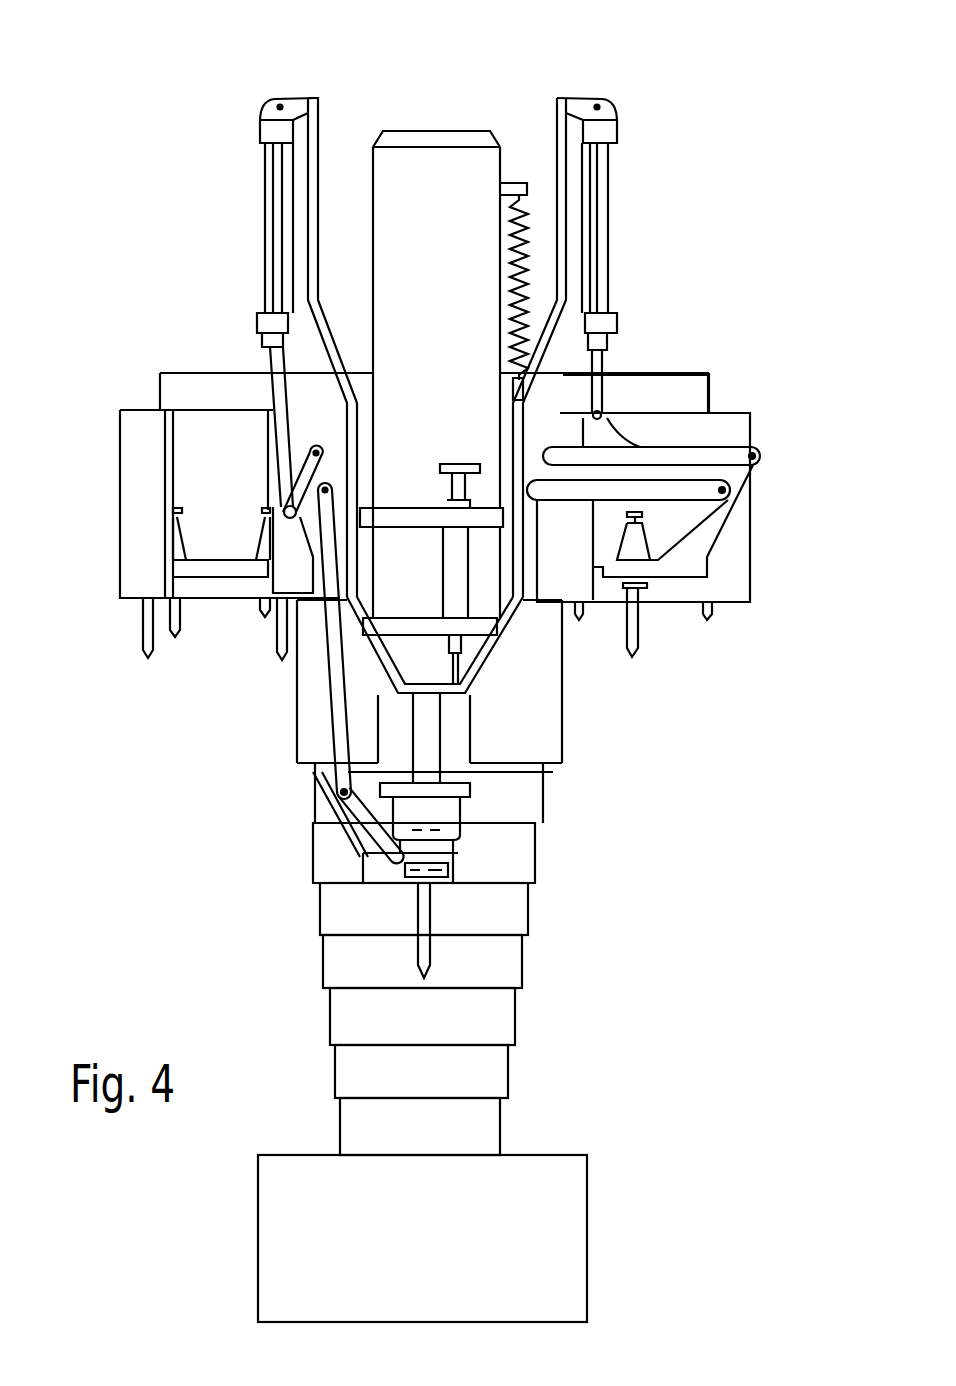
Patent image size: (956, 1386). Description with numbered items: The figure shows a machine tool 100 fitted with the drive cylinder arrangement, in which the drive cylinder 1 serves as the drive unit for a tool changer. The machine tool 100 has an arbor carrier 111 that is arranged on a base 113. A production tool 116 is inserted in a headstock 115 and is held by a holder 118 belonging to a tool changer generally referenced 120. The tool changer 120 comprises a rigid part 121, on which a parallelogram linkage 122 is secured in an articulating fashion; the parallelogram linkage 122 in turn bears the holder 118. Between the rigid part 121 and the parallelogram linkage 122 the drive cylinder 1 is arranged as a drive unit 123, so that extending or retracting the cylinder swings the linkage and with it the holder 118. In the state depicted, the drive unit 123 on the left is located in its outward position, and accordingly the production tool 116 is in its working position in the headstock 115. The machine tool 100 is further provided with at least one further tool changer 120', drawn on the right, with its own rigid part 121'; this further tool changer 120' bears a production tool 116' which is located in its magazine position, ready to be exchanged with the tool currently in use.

The drive cylinder 1 is at (258, 178).
The machine tool 100 is at (147, 740).
The arbor carrier 111 is at (438, 153).
The base 113 is at (550, 1233).
The headstock 115 is at (448, 813).
The production tool 116 is at (514, 930).
The production tool 116' is at (696, 626).
The holder 118 is at (378, 872).
The tool changer 120 is at (230, 413).
The further tool changer 120' is at (643, 409).
The rigid part 121 is at (332, 306).
The rigid part 121' is at (565, 303).
The parallelogram linkage 122 is at (323, 678).
The drive unit 123 is at (258, 267).